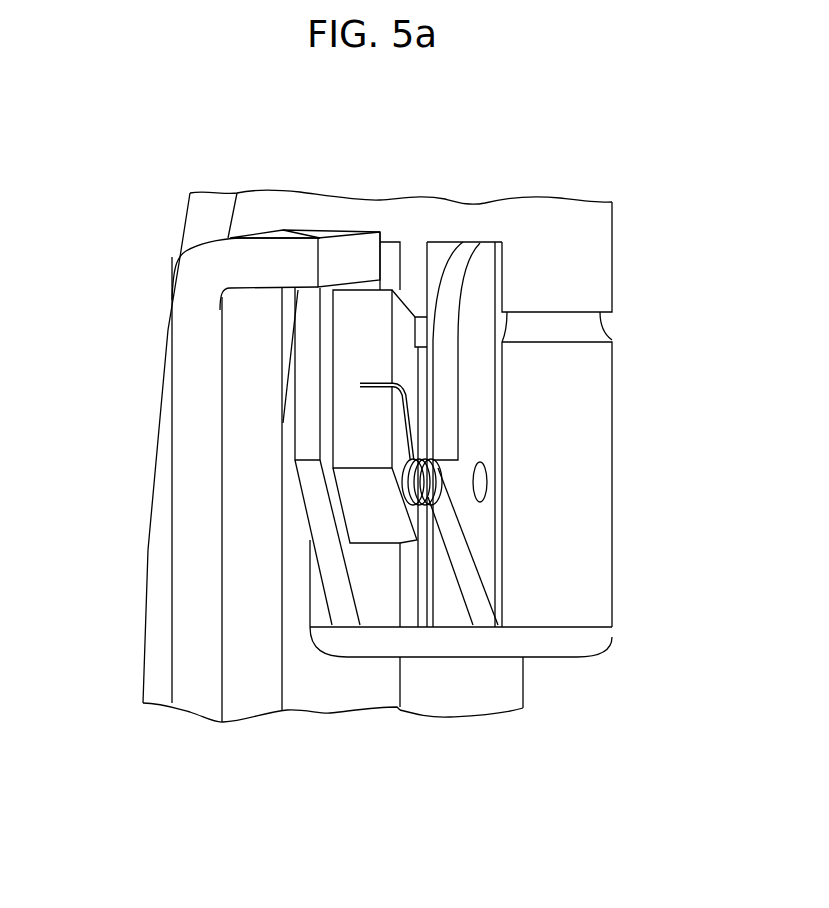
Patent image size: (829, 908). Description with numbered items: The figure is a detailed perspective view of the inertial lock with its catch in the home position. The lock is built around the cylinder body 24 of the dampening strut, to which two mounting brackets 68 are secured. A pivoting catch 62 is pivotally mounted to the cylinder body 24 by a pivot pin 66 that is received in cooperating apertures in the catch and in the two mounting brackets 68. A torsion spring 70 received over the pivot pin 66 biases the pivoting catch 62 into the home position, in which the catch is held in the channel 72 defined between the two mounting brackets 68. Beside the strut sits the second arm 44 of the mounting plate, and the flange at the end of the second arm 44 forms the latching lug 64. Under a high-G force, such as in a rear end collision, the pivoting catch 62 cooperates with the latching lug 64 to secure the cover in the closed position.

The cylinder body 24 is at (600, 278).
The second arm 44 is at (187, 468).
The pivoting catch 62 is at (355, 442).
The latching lug 64 is at (268, 263).
The pivot pin 66 is at (482, 482).
The mounting brackets 68 is at (390, 265).
The torsion spring 70 is at (437, 495).
The channel 72 is at (375, 595).